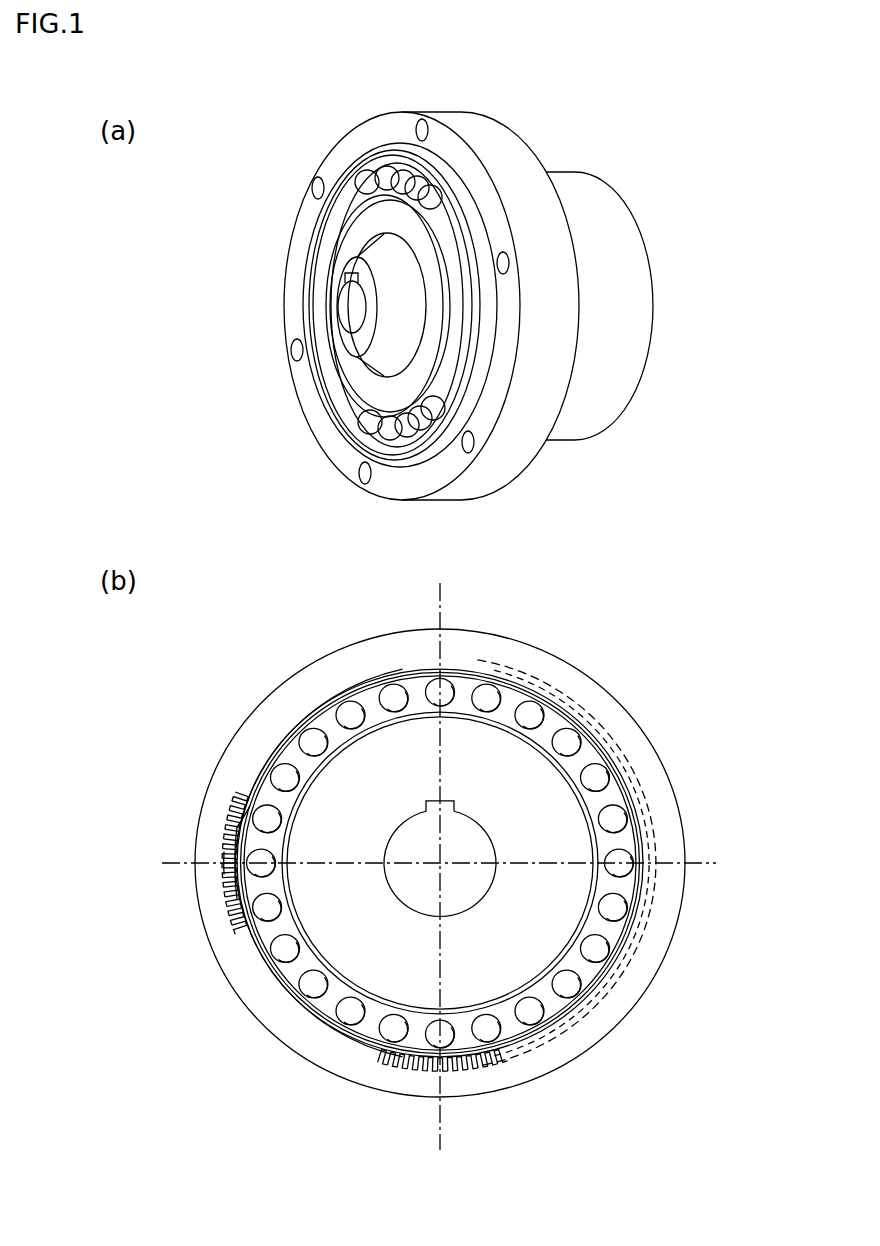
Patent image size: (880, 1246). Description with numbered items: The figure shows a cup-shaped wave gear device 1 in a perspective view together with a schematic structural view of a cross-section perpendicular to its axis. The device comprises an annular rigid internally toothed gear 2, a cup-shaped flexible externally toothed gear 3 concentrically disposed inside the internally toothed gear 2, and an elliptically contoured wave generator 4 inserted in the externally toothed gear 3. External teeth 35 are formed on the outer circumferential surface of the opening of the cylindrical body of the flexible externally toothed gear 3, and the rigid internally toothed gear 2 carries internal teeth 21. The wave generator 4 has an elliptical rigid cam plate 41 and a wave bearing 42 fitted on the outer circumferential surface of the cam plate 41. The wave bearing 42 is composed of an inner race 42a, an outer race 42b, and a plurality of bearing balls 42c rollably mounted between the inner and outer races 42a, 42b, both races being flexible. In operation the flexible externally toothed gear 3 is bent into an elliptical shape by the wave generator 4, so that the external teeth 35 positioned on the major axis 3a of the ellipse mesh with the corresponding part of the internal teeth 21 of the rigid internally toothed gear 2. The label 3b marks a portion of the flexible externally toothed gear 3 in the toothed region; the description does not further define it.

The cup-shaped wave gear device 1 is at (693, 695).
The rigid internally toothed gear 2 is at (515, 165).
The cup-shaped flexible externally toothed gear 3 is at (337, 188).
The major axis of the ellipse 3a is at (443, 612).
The external teeth 3b is at (181, 862).
The internal teeth 21 is at (233, 870).
The external teeth 35 is at (234, 928).
The wave generator 4 is at (494, 670).
The rigid cam plate 41 is at (543, 828).
The wave bearing 42 is at (450, 670).
The inner race 42a is at (527, 992).
The outer race 42b is at (580, 1010).
The bearing balls 42c is at (555, 988).